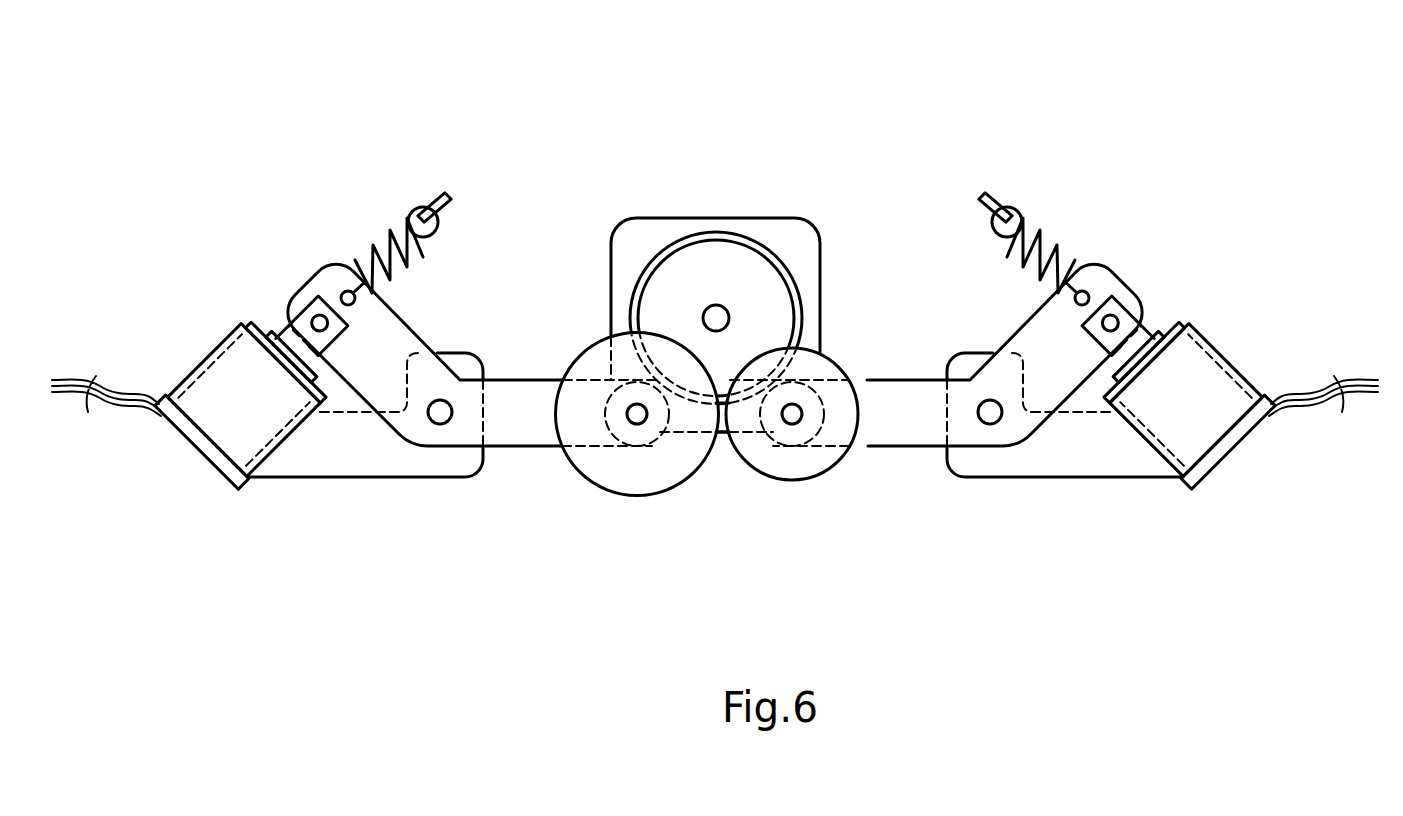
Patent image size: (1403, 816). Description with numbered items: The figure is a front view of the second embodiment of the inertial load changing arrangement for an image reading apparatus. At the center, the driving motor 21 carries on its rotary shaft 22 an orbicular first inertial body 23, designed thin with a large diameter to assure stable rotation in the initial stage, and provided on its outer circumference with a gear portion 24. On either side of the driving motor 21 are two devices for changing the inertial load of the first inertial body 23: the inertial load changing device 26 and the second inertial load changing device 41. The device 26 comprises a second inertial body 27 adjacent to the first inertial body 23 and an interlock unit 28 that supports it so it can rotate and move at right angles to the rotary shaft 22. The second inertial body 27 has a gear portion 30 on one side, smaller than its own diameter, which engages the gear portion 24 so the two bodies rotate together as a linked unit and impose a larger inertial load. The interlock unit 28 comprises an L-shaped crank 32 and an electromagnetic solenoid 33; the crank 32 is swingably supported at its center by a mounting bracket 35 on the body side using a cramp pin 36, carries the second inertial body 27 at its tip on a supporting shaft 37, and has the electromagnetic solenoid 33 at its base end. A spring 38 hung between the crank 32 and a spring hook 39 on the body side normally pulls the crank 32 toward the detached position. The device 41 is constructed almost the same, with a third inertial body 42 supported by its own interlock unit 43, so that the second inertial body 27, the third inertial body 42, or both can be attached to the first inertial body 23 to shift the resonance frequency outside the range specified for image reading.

The driving motor 21 is at (805, 230).
The rotary shaft 22 is at (716, 305).
The first inertial body 23 is at (680, 272).
The gear portion 24 is at (639, 278).
The inertial load changing device 26 is at (1176, 134).
The second inertial body 27 is at (833, 475).
The interlock unit 28 is at (1264, 344).
The gear portion 30 is at (652, 440).
The crank 32 is at (308, 282).
The electromagnetic solenoid 33 is at (205, 452).
The mounting bracket 35 is at (322, 478).
The cramp pin 36 is at (443, 425).
The supporting shaft 37 is at (626, 418).
The spring 38 is at (401, 225).
The spring hook 39 is at (446, 200).
The second inertial load changing device 41 is at (250, 132).
The third inertial body 42 is at (587, 479).
The interlock unit 43 is at (228, 294).